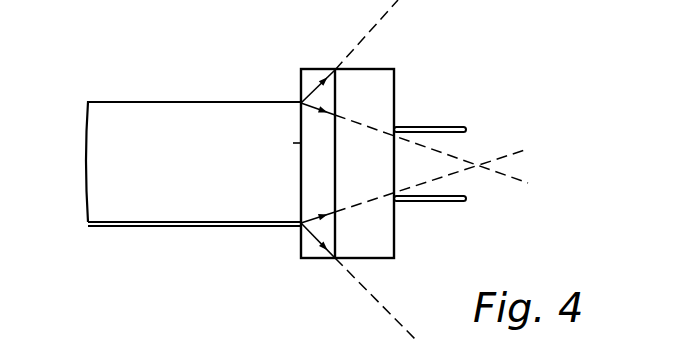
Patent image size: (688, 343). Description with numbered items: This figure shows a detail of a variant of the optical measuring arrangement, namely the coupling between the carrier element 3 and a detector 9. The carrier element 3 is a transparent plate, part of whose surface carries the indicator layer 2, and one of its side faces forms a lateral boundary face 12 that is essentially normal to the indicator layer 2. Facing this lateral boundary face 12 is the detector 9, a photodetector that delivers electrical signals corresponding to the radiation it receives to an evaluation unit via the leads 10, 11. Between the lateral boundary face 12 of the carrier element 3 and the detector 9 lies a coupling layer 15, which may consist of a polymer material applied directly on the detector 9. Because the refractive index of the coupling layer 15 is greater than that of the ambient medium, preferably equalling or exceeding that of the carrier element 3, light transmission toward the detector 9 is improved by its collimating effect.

The indicator layer 2 is at (188, 225).
The carrier element 3 is at (185, 96).
The detector 9 is at (383, 93).
The lead 10 is at (448, 201).
The lead 11 is at (446, 125).
The lateral boundary face 12 is at (293, 143).
The coupling layer 15 is at (316, 70).